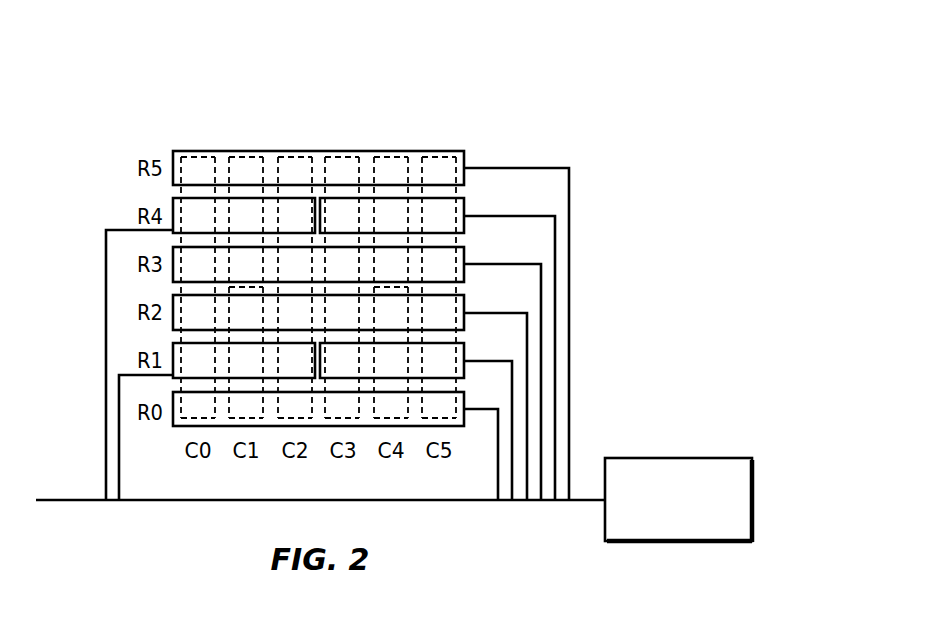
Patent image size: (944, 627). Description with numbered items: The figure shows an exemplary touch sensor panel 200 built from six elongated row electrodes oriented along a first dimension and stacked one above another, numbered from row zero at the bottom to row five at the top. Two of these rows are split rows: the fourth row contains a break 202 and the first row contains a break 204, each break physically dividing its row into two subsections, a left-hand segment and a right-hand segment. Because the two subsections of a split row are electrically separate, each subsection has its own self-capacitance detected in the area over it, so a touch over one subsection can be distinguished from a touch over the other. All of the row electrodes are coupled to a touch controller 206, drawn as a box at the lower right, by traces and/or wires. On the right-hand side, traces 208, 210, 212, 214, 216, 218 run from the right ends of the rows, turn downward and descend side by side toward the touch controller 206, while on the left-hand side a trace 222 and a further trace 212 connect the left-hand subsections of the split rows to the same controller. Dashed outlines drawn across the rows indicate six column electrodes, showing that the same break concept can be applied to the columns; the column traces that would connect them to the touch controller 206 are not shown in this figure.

The touch sensor panel 200 is at (186, 96).
The break 202 is at (320, 218).
The break 204 is at (320, 362).
The touch controller 206 is at (678, 458).
The trace 208 is at (570, 193).
The trace 210 is at (556, 242).
The trace 212 is at (542, 290).
The trace 214 is at (528, 338).
The trace 216 is at (513, 386).
The trace 218 is at (499, 434).
The trace 222 is at (106, 328).